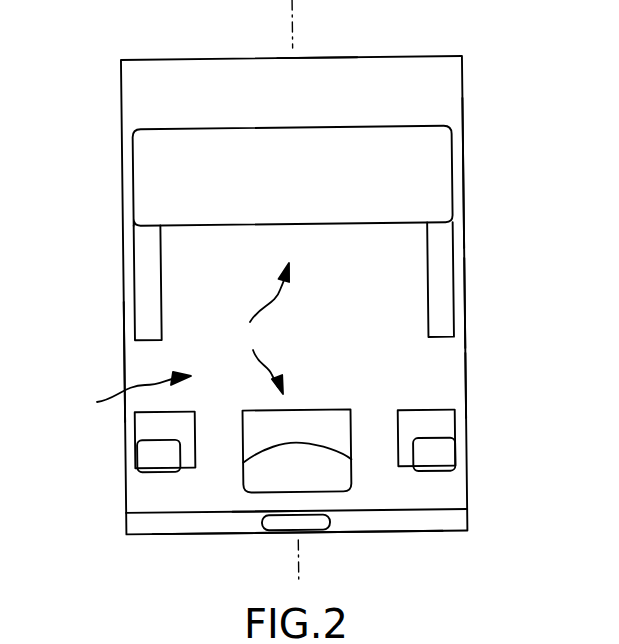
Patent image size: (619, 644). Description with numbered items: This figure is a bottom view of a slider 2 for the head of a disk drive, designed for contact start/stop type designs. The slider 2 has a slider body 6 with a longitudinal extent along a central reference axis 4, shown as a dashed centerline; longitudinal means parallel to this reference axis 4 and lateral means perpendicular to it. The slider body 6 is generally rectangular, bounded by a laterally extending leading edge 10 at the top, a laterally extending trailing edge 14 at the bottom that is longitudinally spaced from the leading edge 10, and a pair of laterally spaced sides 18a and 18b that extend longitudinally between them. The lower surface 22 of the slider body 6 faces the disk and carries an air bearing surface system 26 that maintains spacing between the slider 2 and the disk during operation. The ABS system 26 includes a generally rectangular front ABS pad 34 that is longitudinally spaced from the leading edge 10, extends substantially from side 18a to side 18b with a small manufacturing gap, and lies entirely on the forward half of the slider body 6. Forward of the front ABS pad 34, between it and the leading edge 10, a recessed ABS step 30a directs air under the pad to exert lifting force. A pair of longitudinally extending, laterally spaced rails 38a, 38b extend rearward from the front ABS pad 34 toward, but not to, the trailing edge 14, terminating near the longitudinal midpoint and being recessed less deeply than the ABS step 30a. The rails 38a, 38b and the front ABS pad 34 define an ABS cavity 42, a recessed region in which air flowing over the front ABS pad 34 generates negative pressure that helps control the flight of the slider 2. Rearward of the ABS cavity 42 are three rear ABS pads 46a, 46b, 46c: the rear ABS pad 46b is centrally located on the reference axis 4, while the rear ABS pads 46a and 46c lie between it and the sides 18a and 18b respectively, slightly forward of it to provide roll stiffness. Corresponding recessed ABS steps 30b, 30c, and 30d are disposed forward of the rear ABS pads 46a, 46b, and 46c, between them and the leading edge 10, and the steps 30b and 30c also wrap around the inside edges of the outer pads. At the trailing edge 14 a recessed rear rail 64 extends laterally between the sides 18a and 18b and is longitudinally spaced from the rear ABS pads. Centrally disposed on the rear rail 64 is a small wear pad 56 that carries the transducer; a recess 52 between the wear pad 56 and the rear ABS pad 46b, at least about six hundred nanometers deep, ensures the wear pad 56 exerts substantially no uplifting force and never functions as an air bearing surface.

The slider 2 is at (466, 173).
The central reference axis 4 is at (291, 19).
The slider body 6 is at (468, 320).
The leading edge 10 is at (394, 58).
The trailing edge 14 is at (426, 535).
The side 18a is at (125, 366).
The side 18b is at (468, 378).
The lower surface 22 is at (128, 394).
The air bearing surface system 26 is at (262, 328).
The ABS step 30a is at (318, 70).
The ABS step 30b is at (151, 424).
The ABS step 30c is at (327, 420).
The ABS step 30d is at (448, 416).
The front ABS pad 34 is at (338, 180).
The rail 38a is at (144, 283).
The rail 38b is at (446, 258).
The ABS cavity 42 is at (358, 305).
The rear ABS pad 46a is at (150, 460).
The rear ABS pad 46b is at (339, 472).
The rear ABS pad 46c is at (449, 455).
The recess 52 is at (282, 501).
The wear pad 56 is at (322, 522).
The rear rail 64 is at (458, 520).